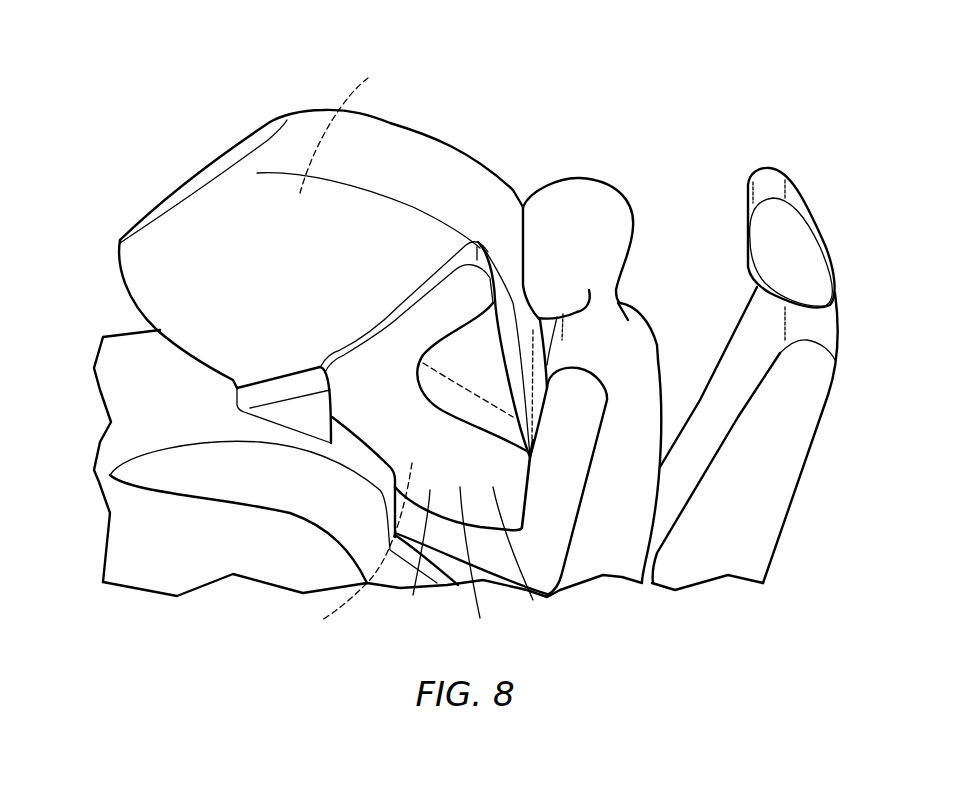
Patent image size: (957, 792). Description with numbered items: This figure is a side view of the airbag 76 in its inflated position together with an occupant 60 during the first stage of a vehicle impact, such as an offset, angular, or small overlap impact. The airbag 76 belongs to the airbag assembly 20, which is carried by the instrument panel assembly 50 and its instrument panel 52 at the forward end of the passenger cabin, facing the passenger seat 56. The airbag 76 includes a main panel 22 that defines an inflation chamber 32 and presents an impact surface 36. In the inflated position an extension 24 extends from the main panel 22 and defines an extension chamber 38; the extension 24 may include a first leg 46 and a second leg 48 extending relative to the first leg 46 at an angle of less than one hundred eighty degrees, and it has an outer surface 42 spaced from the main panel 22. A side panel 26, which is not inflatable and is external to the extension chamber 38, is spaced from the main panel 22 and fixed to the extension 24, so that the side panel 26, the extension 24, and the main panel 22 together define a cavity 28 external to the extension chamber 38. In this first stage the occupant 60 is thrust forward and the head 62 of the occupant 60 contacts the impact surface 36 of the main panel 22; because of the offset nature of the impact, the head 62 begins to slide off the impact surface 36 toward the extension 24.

The airbag assembly 20 is at (196, 96).
The main panel 22 is at (293, 128).
The extension 24 is at (413, 595).
The side panel 26 is at (474, 362).
The cavity 28 is at (517, 363).
The inflation chamber 32 is at (350, 129).
The impact surface 36 is at (513, 253).
The extension chamber 38 is at (352, 548).
The outer surface 42 is at (480, 618).
The first leg 46 is at (533, 600).
The second leg 48 is at (468, 286).
The instrument panel assembly 50 is at (80, 340).
The instrument panel 52 is at (147, 427).
The passenger seat 56 is at (787, 414).
The occupant 60 is at (647, 365).
The head 62 is at (633, 217).
The airbag 76 is at (182, 146).